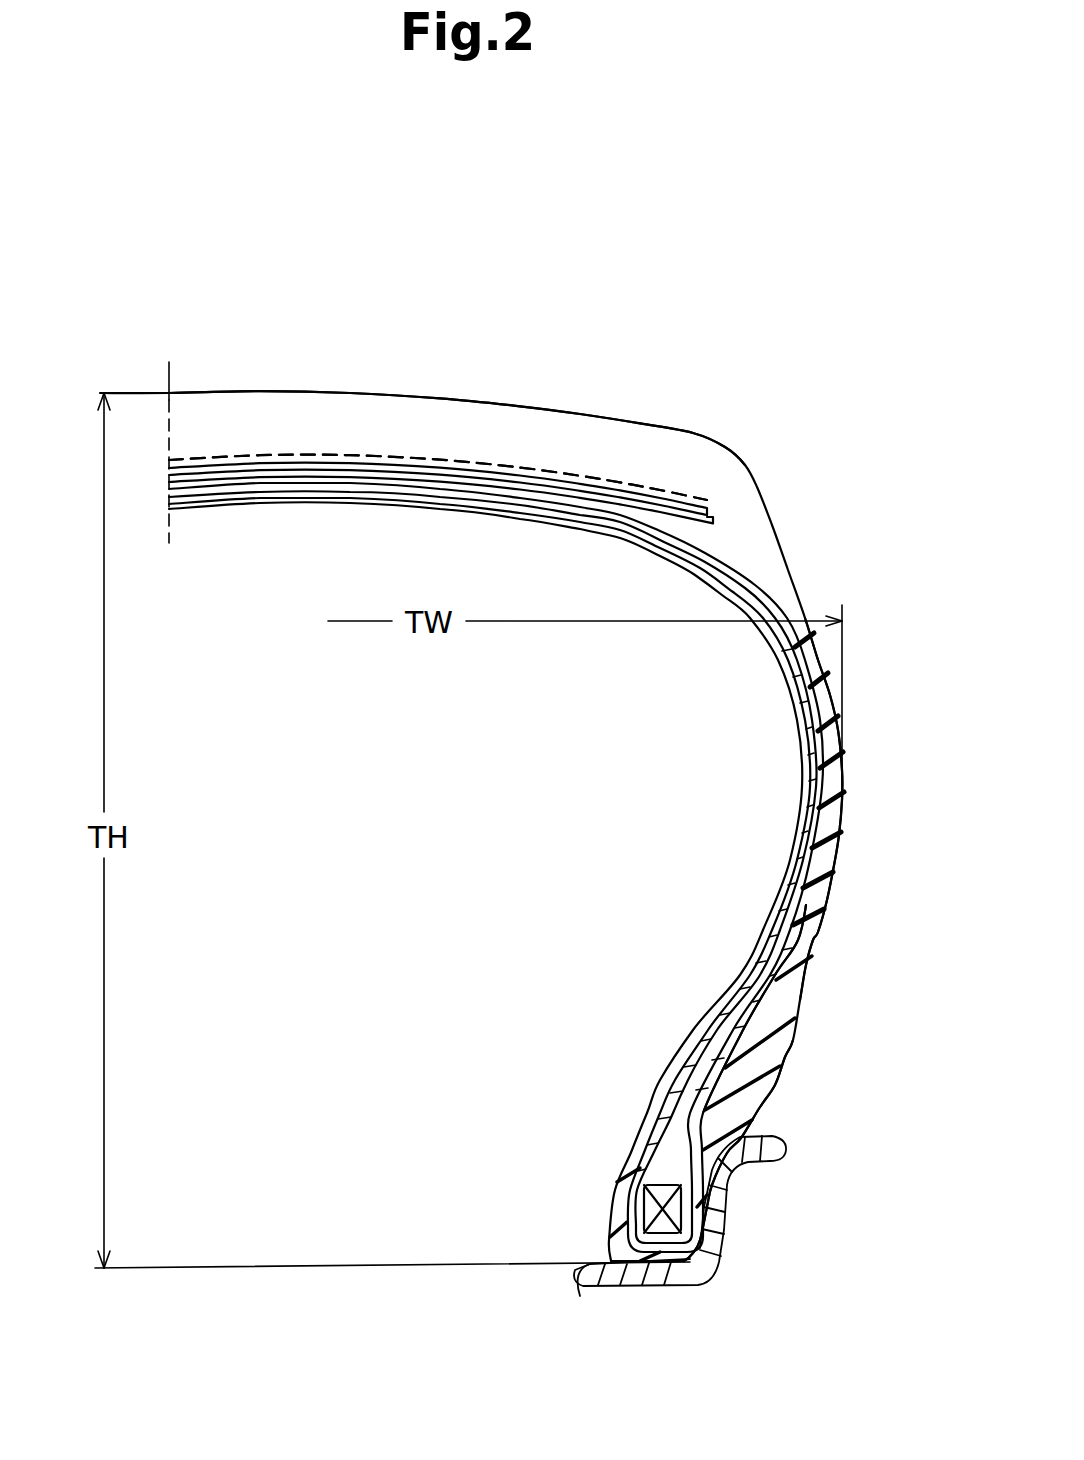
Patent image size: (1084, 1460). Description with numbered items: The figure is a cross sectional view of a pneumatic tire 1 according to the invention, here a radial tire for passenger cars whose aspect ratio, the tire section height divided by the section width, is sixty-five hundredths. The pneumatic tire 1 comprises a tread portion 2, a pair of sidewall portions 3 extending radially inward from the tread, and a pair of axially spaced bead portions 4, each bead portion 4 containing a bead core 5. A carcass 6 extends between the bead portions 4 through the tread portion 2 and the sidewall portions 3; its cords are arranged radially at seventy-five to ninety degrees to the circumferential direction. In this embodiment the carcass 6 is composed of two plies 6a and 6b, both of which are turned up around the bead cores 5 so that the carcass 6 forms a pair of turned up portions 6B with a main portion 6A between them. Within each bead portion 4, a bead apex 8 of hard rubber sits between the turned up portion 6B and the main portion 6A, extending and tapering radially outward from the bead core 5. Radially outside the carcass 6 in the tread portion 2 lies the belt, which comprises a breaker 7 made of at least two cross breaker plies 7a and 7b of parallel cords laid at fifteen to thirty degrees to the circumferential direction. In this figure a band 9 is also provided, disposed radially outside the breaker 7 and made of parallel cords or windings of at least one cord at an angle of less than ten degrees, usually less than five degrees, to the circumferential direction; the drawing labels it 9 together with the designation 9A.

The pneumatic tire 1 is at (792, 480).
The tread portion 2 is at (568, 408).
The sidewall portion 3 is at (855, 756).
The bead portion 4 is at (741, 1198).
The bead core 5 is at (655, 1209).
The carcass 6 is at (496, 872).
The carcass ply 6a is at (800, 728).
The carcass ply 6b is at (790, 663).
The main portion 6A is at (840, 800).
The turned up portion 6B is at (802, 928).
The breaker 7 is at (441, 388).
The breaker ply 7a is at (285, 474).
The breaker ply 7b is at (260, 467).
The bead apex 8 is at (667, 1133).
The band 9 is at (473, 462).
The full band ply 9A is at (438, 381).